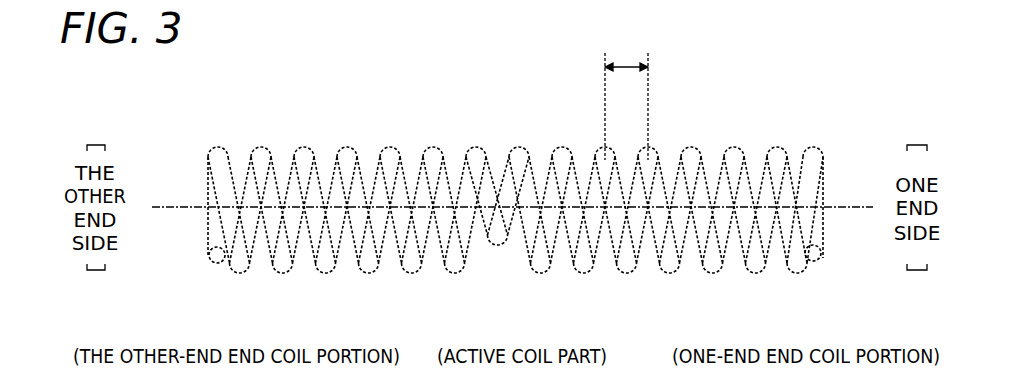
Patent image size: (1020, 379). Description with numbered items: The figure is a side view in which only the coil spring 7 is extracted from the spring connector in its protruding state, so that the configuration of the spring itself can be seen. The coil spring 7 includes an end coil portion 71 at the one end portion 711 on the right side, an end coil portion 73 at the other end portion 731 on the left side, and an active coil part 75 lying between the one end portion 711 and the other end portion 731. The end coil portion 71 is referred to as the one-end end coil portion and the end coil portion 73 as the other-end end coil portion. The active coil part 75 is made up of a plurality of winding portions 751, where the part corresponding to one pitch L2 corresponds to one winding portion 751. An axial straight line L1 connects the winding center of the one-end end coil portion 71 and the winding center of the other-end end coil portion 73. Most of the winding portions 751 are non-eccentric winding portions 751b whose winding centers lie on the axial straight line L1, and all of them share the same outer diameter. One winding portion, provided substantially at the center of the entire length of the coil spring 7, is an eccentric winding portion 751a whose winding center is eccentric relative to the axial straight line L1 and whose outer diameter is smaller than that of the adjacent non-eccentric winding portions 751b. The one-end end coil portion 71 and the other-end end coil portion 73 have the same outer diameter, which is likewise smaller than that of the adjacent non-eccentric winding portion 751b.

The coil spring 7 is at (515, 175).
The end coil portion 71 is at (775, 283).
The one end portion 711 is at (822, 257).
The end coil portion 73 is at (205, 283).
The other end portion 731 is at (210, 258).
The active coil part 75 is at (519, 175).
The winding portion 751 is at (519, 141).
The eccentric winding portion 751a is at (497, 157).
The non-eccentric winding portion 751b is at (733, 135).
The axial straight line L1 is at (846, 204).
The pitch L2 is at (627, 64).